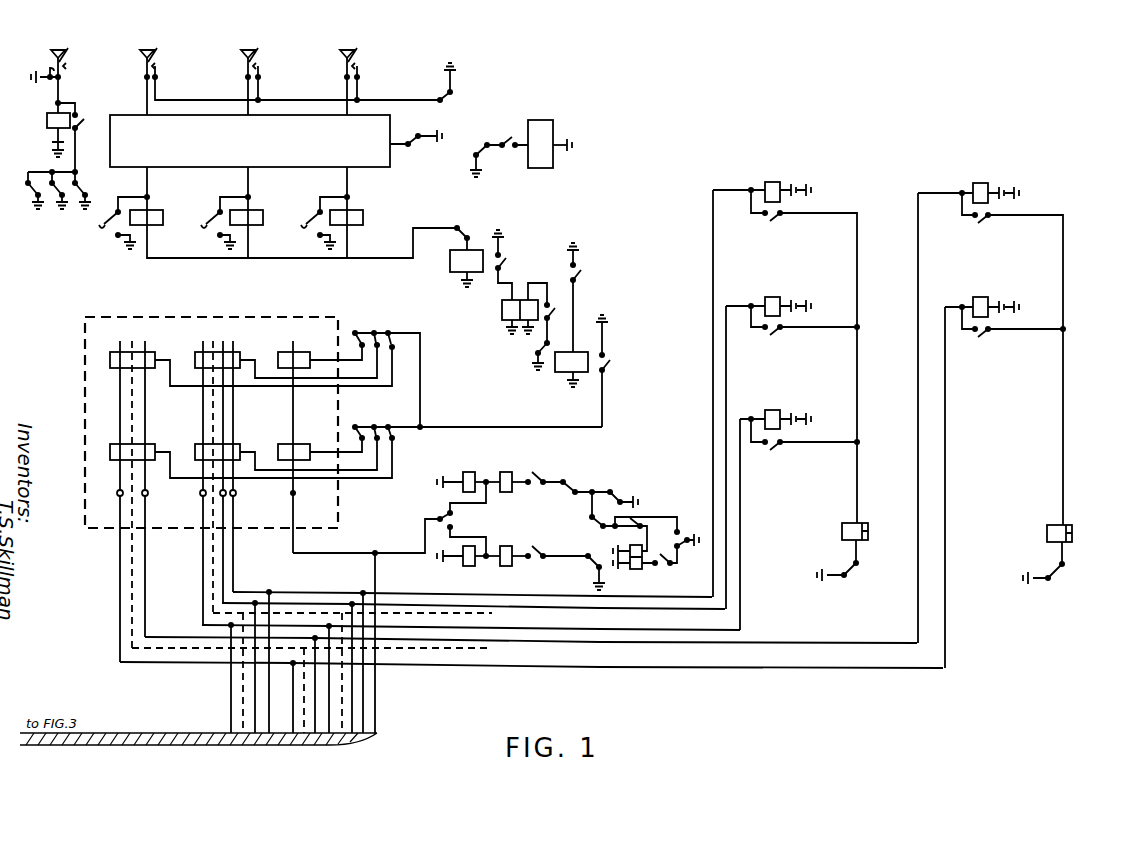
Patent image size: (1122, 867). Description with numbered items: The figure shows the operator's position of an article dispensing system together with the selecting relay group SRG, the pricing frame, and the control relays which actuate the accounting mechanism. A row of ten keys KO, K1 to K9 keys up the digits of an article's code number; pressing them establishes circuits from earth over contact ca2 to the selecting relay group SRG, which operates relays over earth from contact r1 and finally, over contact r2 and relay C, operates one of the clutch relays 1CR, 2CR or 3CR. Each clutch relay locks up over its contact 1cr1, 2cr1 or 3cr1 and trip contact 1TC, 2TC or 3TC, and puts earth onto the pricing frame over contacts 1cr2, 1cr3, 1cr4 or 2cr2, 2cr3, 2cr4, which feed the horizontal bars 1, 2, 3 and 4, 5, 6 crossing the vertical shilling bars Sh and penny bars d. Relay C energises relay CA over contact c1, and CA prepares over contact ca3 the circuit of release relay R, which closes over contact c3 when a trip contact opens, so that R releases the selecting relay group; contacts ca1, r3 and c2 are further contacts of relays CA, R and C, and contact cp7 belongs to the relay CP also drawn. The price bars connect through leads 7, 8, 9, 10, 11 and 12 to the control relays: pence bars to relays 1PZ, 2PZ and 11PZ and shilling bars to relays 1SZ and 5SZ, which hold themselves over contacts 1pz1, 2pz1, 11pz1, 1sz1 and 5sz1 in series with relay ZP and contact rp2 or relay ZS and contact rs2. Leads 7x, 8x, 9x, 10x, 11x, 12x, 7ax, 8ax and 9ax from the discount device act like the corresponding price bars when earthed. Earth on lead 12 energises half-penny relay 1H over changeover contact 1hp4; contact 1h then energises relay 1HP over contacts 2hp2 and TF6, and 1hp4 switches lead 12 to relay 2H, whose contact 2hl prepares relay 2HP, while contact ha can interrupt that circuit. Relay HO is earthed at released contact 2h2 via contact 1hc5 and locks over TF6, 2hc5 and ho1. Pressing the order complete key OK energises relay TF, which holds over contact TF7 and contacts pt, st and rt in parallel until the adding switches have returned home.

The order complete key OK is at (49, 67).
The key KO is at (289, 73).
The key K1 is at (250, 73).
The key K9 is at (349, 73).
The relay TF is at (48, 128).
The contact tf7 TF7 is at (78, 137).
The contact pt is at (44, 189).
The contact st is at (55, 190).
The contact rt is at (84, 190).
The selecting relay group SRG is at (250, 141).
The contact ca2 is at (455, 85).
The contact r1 is at (416, 143).
The contact c3 is at (479, 159).
The contact ca3 is at (512, 149).
The release relay R is at (550, 134).
The clutch relay 1CR is at (161, 218).
The contact 1cr1 is at (120, 223).
The trip contact 1TC is at (102, 245).
The clutch relay 2CR is at (261, 218).
The contact 2cr1 is at (221, 223).
The trip contact 2TC is at (203, 245).
The clutch relay 3CR is at (361, 218).
The contact 3cr1 is at (321, 223).
The trip contact 3TC is at (303, 245).
The contact r2 is at (469, 235).
The relay C is at (458, 268).
The contact c1 is at (504, 265).
The relay CA is at (507, 317).
The ca1 contact ca1 is at (548, 313).
The r3 contact r3 is at (547, 354).
The c2 contact c2 is at (579, 297).
The relay CP is at (563, 369).
The cp7 contact cp7 is at (614, 371).
The Sh selector wiper Sh is at (132, 492).
The d selector wiper d is at (217, 473).
The horizontal bar 1 is at (251, 365).
The horizontal bar 2 is at (286, 361).
The horizontal bar 3 is at (320, 356).
The horizontal bar 4 is at (251, 457).
The horizontal bar 5 is at (286, 453).
The horizontal bar 6 is at (320, 448).
The contact 1cr2 is at (352, 342).
The contact 1cr3 is at (380, 334).
The contact 1cr4 is at (399, 343).
The contact 2cr2 is at (352, 436).
The contact 2cr3 is at (380, 427).
The contact 2cr4 is at (400, 436).
The half-penny control relay 1H is at (468, 474).
The relay 1HP is at (512, 474).
The contact 1h is at (544, 475).
The contact 2hp2 is at (585, 484).
The contact tf6 TF6 is at (622, 495).
The contact 2hc5 is at (606, 514).
The contact ho1 is at (644, 531).
The contact 2h2 is at (657, 533).
The relay HO is at (634, 565).
The contact 1hc5 is at (666, 563).
The half-penny control relay 2H is at (468, 564).
The relay 2HP is at (511, 564).
The contact 2h1 2hl is at (556, 549).
The contact ha is at (591, 564).
The contact 1hp4 is at (389, 519).
The lead 12 is at (360, 549).
The lead 7 is at (472, 589).
The lead 8 is at (473, 601).
The lead 9 is at (471, 623).
The lead 10 is at (531, 636).
The lead 11 is at (531, 661).
The lead 9ax is at (229, 677).
The lead 8ax is at (254, 666).
The lead 7ax is at (268, 661).
The lead 11x is at (292, 696).
The lead 10x is at (314, 684).
The lead 9x is at (328, 678).
The lead 8x is at (352, 667).
The lead 7x is at (363, 661).
The lead 12x is at (377, 641).
The pence control relay 1PZ is at (762, 381).
The 1pz1 contact 1pz1 is at (804, 356).
The pence control relay 2PZ is at (768, 445).
The 2pz1 contact 2pz1 is at (805, 328).
The pence control relay 11PZ is at (775, 511).
The contact 11pz1 is at (805, 443).
The relay ZP is at (864, 543).
The contact rp2 is at (847, 572).
The shilling control relay 1SZ is at (968, 405).
The 1sz1 contact 1sz1 is at (1012, 359).
The shilling control relay 5SZ is at (982, 474).
The 5sz1 contact 5sz1 is at (1014, 330).
The relay ZS is at (1070, 544).
The contact rs2 is at (1053, 573).